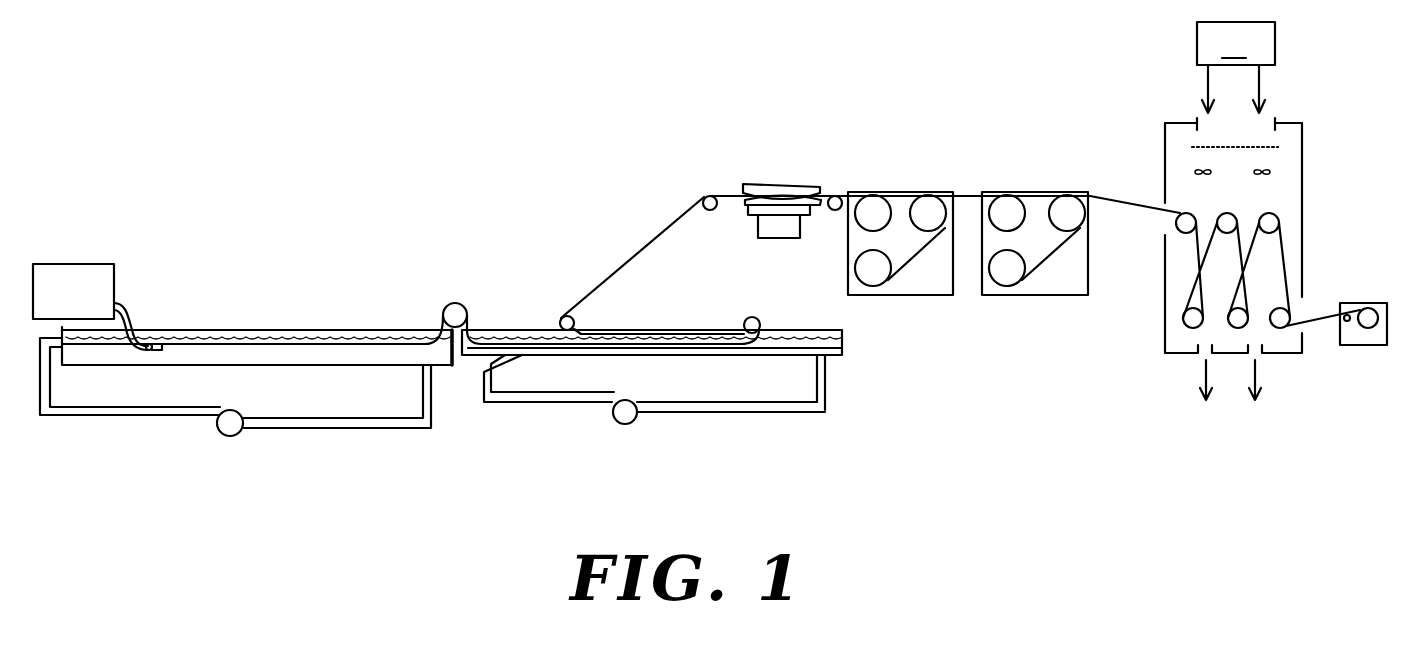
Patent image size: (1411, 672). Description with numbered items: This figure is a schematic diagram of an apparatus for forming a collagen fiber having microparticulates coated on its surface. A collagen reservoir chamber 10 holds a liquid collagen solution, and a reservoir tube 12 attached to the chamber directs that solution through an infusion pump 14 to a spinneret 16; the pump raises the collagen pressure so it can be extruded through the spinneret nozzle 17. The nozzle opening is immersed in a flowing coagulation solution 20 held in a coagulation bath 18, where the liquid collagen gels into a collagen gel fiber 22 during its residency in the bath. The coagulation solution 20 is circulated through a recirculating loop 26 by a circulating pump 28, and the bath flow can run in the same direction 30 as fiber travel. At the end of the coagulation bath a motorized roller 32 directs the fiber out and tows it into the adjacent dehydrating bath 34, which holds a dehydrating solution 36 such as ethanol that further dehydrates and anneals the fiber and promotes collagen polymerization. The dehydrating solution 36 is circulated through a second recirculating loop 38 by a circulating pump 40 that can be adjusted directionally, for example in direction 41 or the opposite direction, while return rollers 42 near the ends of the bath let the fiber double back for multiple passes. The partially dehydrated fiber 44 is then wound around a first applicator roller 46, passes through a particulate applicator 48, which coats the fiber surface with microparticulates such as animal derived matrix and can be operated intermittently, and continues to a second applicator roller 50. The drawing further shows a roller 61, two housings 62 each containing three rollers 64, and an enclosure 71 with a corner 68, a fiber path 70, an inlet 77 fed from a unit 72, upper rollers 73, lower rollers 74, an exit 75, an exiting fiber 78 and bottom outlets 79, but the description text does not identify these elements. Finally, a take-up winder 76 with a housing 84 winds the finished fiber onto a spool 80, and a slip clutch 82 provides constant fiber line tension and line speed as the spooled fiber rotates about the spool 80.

The collagen reservoir chamber 10 is at (80, 264).
The reservoir tube 12 is at (116, 304).
The infusion pump 14 is at (136, 328).
The spinneret 16 is at (154, 341).
The spinneret nozzle 17 is at (164, 338).
The coagulation bath 18 is at (384, 360).
The coagulation solution 20 is at (247, 331).
The collagen gel fiber 22 is at (408, 338).
The recirculating loop 26 is at (147, 425).
The circulating pump 28 is at (222, 435).
The direction of fiber travel 30 is at (319, 318).
The roller 32 is at (466, 301).
The dehydrating bath 34 is at (846, 350).
The dehydrating solution 36 is at (778, 351).
The recirculating loop 38 is at (542, 405).
The circulating pump 40 is at (612, 426).
The direction of circulation 41 is at (704, 318).
The return rollers 42 is at (757, 317).
The partially dehydrated fiber 44 is at (652, 240).
The first applicator roller 46 is at (941, 224).
The particulate applicator 48 is at (783, 183).
The second applicator roller 50 is at (838, 196).
The roller 61 is at (837, 211).
The roller station housing 62 is at (1041, 192).
The rollers 64 is at (912, 212).
The dryer housing corner 68 is at (1165, 123).
The web 70 is at (1122, 202).
The dryer housing 71 is at (1290, 184).
The air supply 72 is at (1236, 67).
The upper rollers 73 is at (1165, 223).
The lower rollers 74 is at (1183, 318).
The exit opening 75 is at (1298, 306).
The take-up winder 76 is at (1350, 346).
The inlet opening 77 is at (1264, 122).
The exiting web 78 is at (1305, 341).
The exhaust 79 is at (1198, 361).
The fiber spool 80 is at (1370, 329).
The slip clutch 82 is at (1347, 322).
The wind-up housing 84 is at (1345, 303).